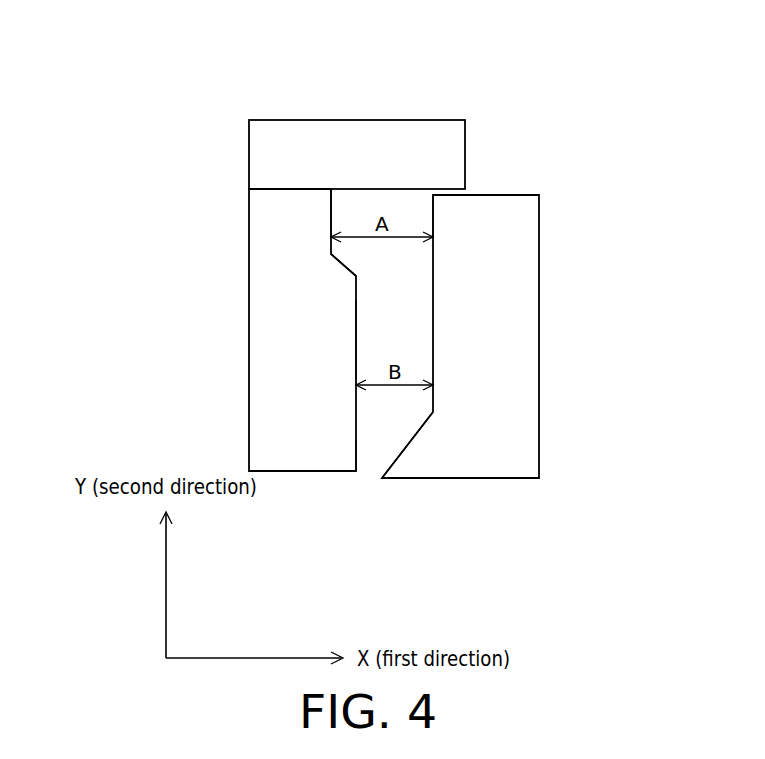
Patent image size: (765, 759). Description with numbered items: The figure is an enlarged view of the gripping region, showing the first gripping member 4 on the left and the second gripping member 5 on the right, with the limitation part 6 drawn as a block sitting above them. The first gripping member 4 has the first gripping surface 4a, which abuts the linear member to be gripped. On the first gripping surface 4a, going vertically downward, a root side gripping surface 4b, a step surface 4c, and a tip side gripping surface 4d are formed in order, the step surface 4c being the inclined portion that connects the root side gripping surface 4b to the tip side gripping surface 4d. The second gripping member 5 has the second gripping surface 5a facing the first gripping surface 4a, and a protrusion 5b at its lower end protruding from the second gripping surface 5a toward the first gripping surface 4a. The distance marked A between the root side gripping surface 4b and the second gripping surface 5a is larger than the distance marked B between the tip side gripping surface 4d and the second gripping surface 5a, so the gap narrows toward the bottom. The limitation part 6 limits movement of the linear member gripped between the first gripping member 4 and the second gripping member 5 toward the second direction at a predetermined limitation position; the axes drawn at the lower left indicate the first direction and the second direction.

The first gripping member 4 is at (256, 298).
The first gripping surface 4a is at (357, 441).
The root side gripping surface 4b is at (331, 229).
The step surface 4c is at (350, 268).
The tip side gripping surface 4d is at (357, 343).
The second gripping member 5 is at (533, 289).
The second gripping surface 5a is at (433, 221).
The protrusion 5b is at (416, 460).
The limitation part 6 is at (351, 125).